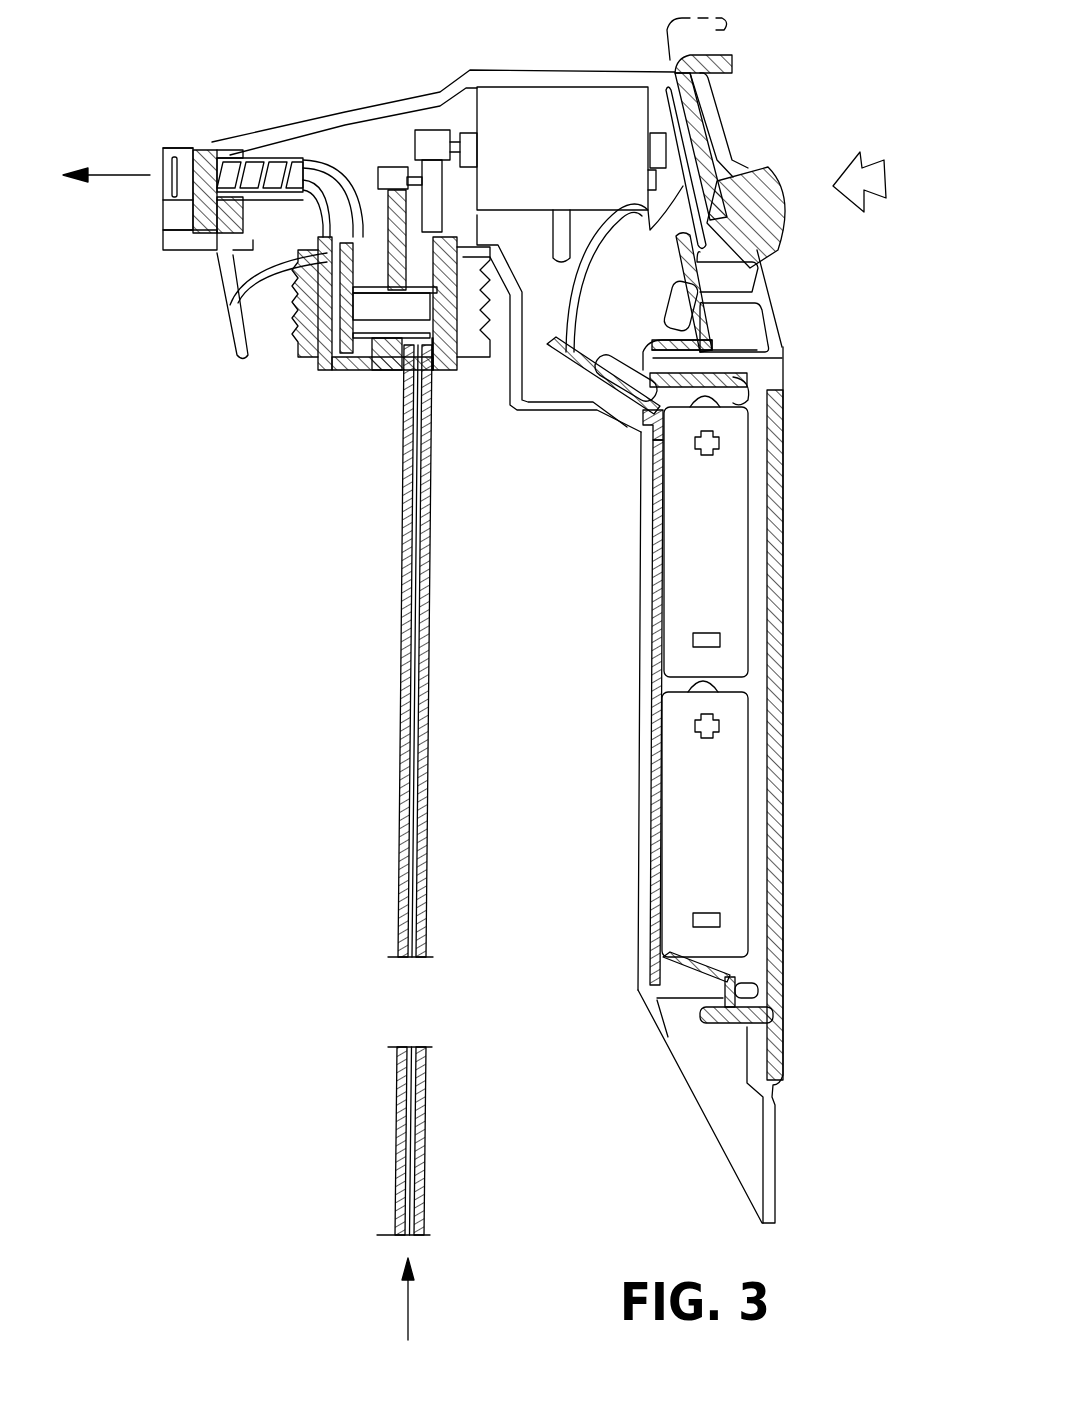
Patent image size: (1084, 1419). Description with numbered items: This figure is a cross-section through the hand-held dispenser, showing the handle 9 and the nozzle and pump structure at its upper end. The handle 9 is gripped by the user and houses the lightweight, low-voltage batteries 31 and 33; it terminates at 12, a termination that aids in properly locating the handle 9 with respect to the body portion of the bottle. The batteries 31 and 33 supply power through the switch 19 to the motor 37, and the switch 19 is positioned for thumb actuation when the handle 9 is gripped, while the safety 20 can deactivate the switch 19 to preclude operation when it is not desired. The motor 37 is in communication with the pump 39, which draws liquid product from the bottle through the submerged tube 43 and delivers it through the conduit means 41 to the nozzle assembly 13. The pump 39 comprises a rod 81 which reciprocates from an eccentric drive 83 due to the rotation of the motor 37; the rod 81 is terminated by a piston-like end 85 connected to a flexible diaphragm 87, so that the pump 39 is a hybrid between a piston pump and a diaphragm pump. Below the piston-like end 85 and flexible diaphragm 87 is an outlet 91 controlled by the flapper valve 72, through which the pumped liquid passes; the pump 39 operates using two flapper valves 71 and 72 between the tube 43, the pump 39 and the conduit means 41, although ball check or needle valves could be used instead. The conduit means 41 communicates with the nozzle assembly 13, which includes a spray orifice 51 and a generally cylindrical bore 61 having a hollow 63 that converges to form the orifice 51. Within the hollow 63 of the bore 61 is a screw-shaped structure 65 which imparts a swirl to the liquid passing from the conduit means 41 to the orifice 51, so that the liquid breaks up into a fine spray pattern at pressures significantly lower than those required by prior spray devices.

The handle 9 is at (787, 718).
The termination of handle 12 is at (703, 1087).
The nozzle assembly 13 is at (257, 143).
The switch 19 is at (783, 240).
The safety 20 is at (732, 62).
The battery 31 is at (727, 567).
The battery 33 is at (722, 885).
The motor 37 is at (500, 110).
The pump 39 is at (417, 323).
The conduit means 41 is at (317, 283).
The submerged tube 43 is at (398, 1184).
The spray orifice 51 is at (193, 182).
The cylindrical bore 61 is at (333, 183).
The hollow 63 is at (320, 183).
The screw-shaped structure 65 is at (217, 163).
The flapper valve 71 is at (432, 420).
The flapper valve 72 is at (377, 367).
The rod 81 is at (387, 217).
The eccentric drive 83 is at (393, 173).
The piston-like end 85 is at (377, 293).
The flexible diaphragm 87 is at (293, 330).
The outlet 91 is at (333, 380).